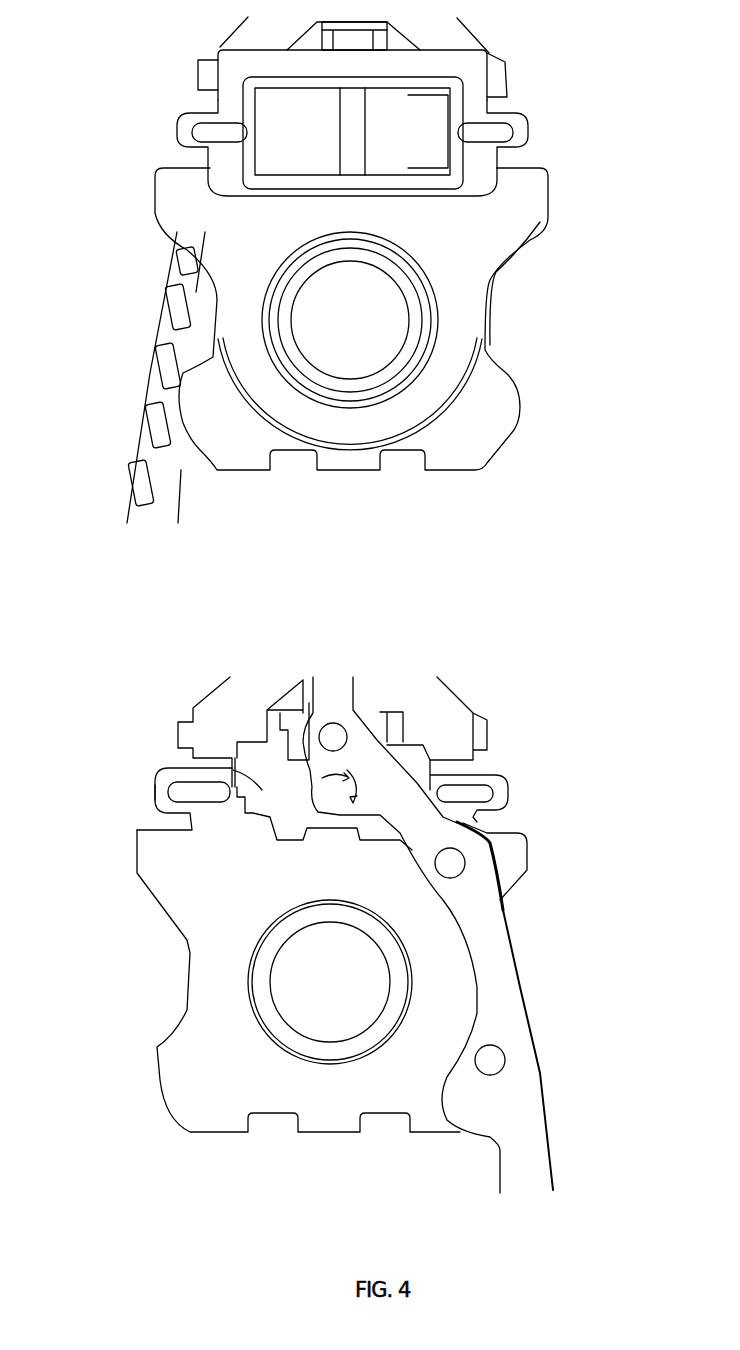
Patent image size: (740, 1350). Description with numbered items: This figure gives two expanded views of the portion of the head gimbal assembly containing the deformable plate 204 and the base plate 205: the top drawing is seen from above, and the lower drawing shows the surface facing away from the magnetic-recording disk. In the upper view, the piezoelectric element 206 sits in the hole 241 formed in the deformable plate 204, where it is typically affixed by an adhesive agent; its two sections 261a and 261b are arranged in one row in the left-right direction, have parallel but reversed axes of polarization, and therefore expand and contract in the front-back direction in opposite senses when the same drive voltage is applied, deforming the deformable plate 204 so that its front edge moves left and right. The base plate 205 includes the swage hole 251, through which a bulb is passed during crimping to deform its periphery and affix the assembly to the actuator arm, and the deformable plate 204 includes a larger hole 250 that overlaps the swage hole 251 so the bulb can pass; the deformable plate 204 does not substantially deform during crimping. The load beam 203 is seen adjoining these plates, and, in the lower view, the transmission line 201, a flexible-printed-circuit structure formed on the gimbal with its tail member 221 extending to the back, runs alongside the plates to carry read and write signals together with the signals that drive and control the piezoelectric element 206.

The transmission line 201 is at (500, 982).
The load beam 203 is at (470, 33).
The deformable plate 204 is at (508, 67).
The base plate 205 is at (465, 395).
The piezoelectric element 206 is at (153, 778).
The tail member 221 is at (136, 470).
The hole 241 is at (253, 187).
The hole 250 is at (382, 985).
The swage hole 251 is at (407, 322).
The section 261a is at (268, 105).
The section 261b is at (427, 134).